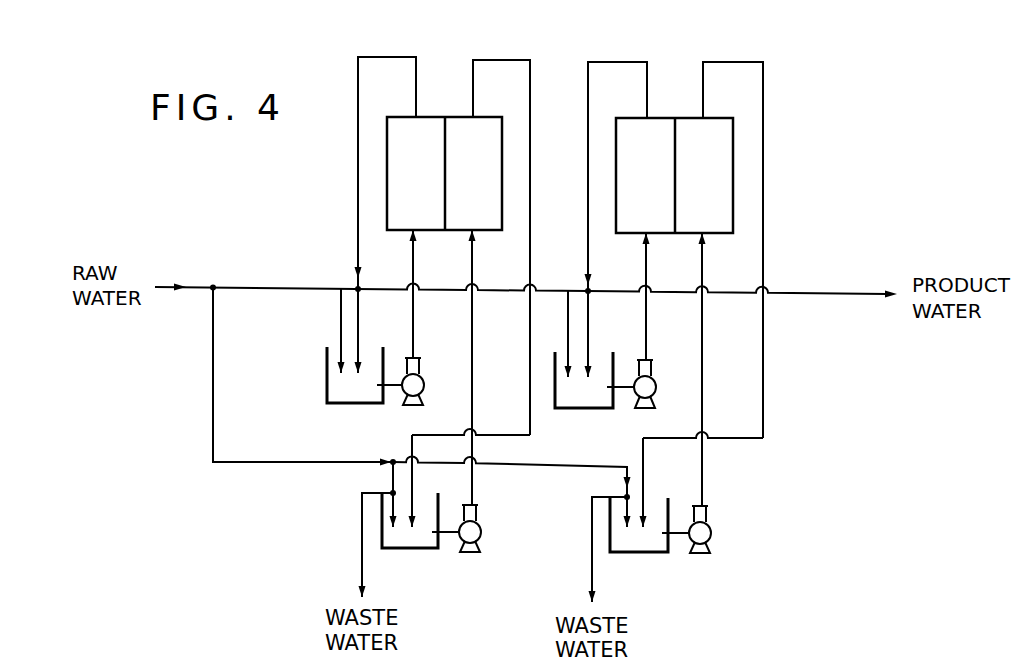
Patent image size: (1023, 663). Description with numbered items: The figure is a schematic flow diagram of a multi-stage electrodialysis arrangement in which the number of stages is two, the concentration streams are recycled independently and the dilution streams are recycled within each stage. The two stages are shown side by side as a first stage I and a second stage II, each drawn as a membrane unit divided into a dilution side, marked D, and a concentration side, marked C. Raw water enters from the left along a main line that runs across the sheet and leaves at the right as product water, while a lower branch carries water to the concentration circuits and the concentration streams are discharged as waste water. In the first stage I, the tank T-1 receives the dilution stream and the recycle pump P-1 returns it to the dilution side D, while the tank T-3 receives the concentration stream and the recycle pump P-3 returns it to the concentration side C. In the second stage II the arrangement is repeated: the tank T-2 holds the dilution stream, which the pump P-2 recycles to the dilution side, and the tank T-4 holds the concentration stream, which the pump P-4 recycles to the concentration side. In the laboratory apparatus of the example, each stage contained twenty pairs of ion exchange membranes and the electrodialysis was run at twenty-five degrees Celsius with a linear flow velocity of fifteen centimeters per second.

The first stage I is at (434, 269).
The second stage II is at (664, 269).
The tank for the dilution stream of the first stage T-1 is at (355, 386).
The tank for the dilution stream of the second stage T-2 is at (584, 392).
The tank for the concentration stream of the first stage T-3 is at (410, 534).
The tank for the concentration stream of the second stage T-4 is at (639, 538).
The pump for recycle P-1 is at (418, 381).
The pump for recycle P-2 is at (647, 384).
The pump for recycle P-3 is at (473, 528).
The pump for recycle P-4 is at (703, 530).